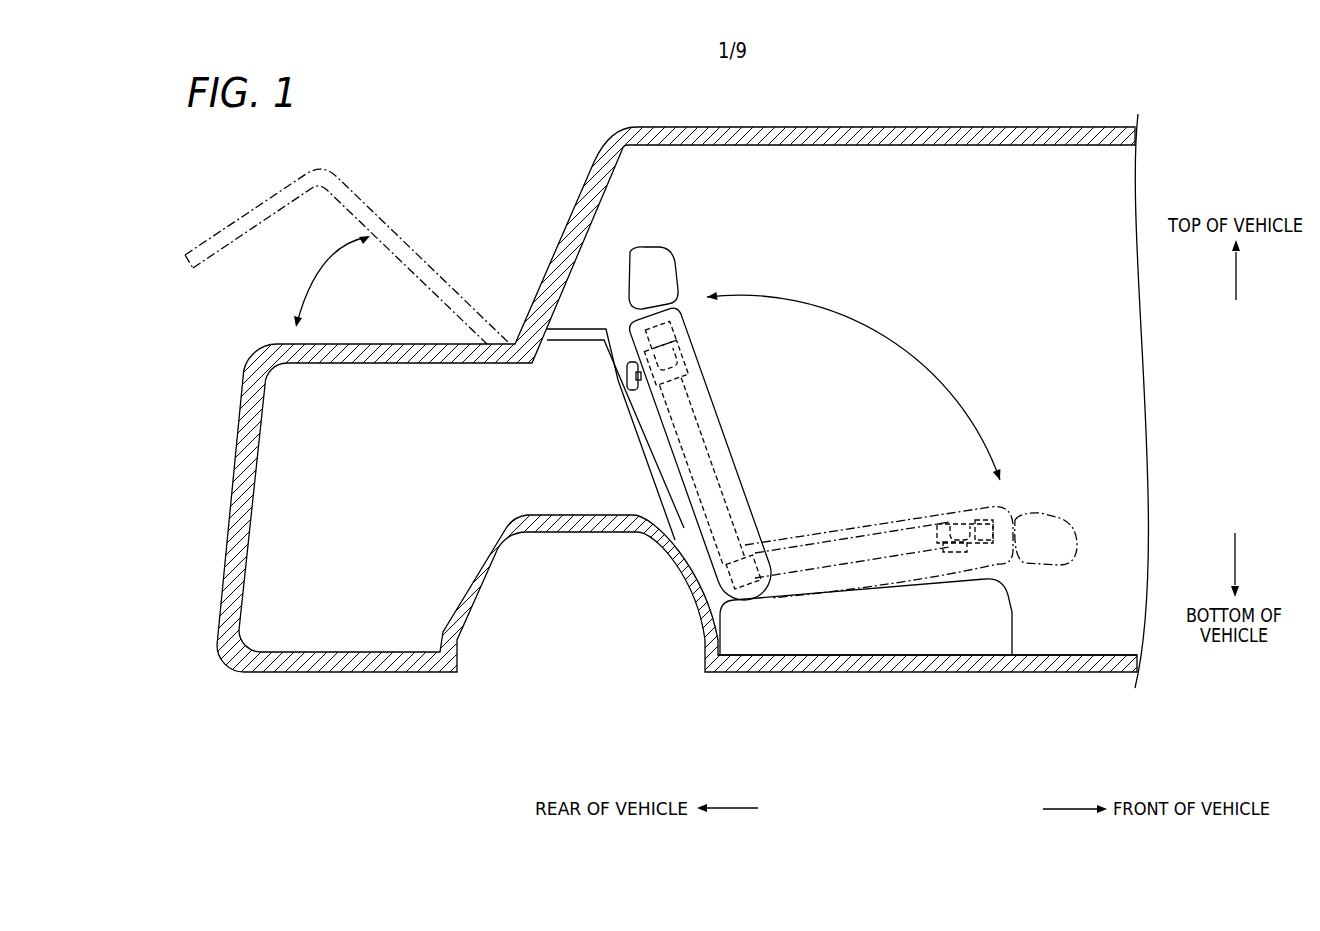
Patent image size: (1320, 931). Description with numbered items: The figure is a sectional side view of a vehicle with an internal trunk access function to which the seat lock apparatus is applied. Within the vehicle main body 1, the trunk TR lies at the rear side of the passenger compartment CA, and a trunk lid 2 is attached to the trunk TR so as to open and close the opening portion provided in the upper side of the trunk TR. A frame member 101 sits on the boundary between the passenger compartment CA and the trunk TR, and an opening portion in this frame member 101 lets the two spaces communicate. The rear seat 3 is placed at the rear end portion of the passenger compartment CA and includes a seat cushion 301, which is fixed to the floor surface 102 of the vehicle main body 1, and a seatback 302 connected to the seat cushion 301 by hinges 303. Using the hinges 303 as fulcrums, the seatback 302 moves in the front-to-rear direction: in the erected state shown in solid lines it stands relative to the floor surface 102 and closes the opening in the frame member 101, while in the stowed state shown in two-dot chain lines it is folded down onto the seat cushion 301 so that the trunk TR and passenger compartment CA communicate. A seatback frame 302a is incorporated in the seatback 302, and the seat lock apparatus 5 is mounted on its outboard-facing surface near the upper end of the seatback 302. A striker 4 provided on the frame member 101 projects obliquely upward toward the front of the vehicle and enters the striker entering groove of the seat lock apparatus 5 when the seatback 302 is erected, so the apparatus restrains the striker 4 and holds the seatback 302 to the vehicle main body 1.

The vehicle main body 1 is at (843, 126).
The trunk lid 2 is at (410, 233).
The rear seat 3 is at (852, 513).
The striker 4 is at (627, 362).
The seat lock apparatus 5 is at (682, 362).
The frame member 101 is at (642, 445).
The floor surface 102 is at (1082, 655).
The seat cushion 301 is at (1012, 630).
The seatback 302 is at (1000, 505).
The seatback frame 302a is at (697, 423).
The hinges 303 is at (775, 580).
The passenger compartment CA is at (914, 171).
The trunk TR is at (290, 493).